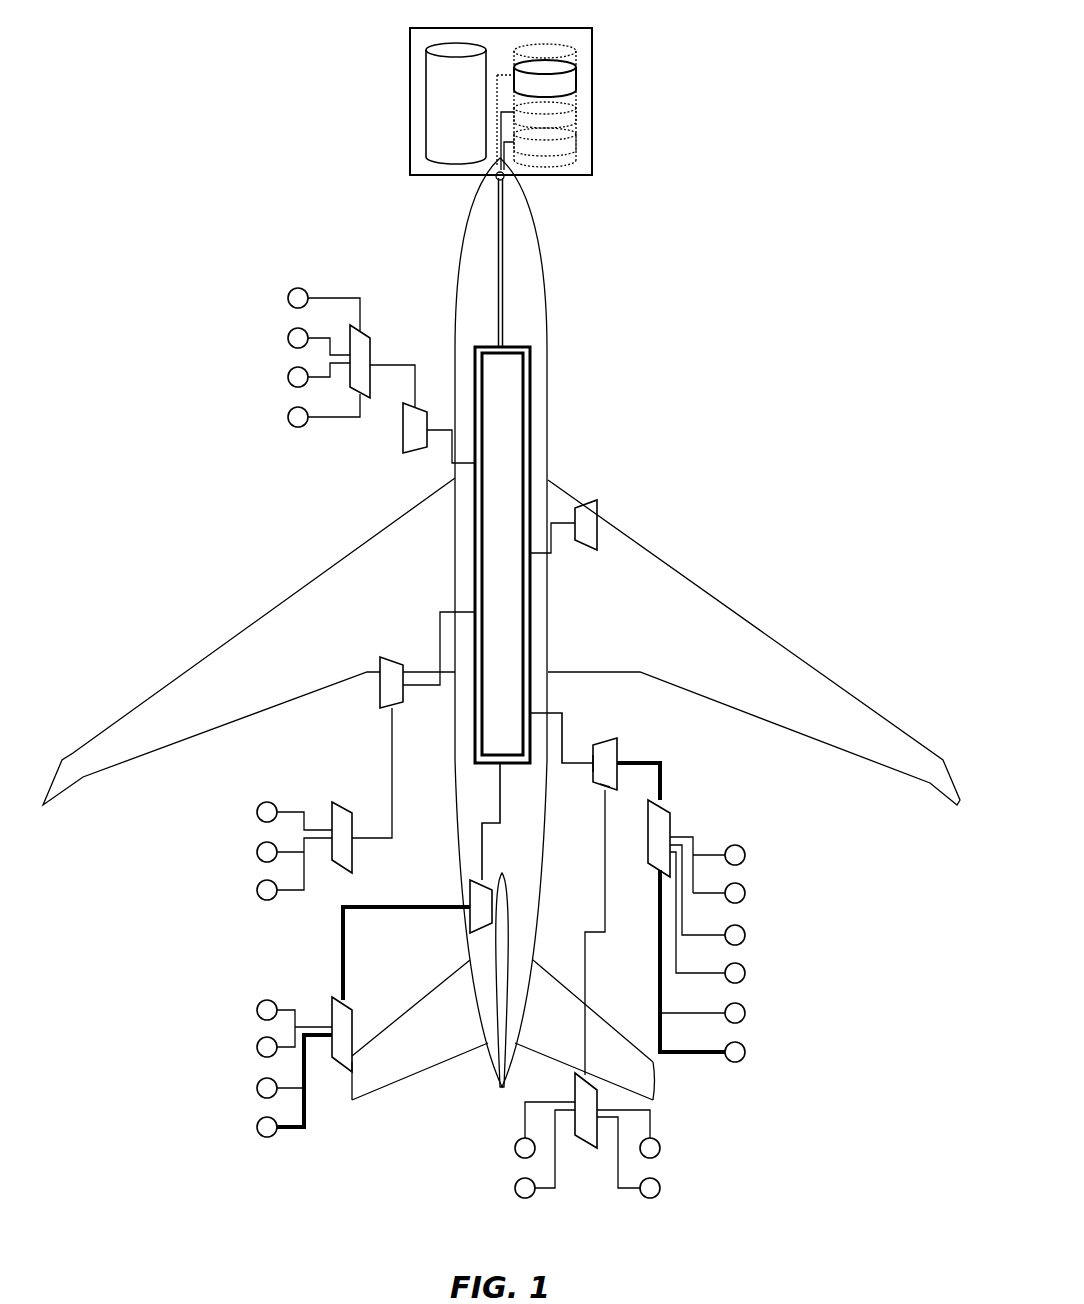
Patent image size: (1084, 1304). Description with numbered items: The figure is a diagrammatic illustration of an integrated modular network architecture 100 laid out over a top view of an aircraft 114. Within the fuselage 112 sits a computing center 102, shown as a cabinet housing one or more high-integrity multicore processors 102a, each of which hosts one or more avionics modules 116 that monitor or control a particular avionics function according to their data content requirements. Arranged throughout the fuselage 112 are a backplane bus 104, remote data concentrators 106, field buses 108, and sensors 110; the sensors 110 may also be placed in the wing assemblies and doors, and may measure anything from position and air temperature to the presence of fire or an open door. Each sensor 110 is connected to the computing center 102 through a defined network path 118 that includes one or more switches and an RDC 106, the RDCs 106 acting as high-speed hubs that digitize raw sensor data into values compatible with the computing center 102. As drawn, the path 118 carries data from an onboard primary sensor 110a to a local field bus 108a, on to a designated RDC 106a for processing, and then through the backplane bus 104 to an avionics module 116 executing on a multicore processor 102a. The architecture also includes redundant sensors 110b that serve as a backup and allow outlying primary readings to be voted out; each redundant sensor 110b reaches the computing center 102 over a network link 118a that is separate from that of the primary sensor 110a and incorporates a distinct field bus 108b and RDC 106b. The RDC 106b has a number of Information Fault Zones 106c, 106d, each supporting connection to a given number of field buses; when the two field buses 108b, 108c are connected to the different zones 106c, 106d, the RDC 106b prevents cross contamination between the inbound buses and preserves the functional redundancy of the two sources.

The network architecture 100 is at (177, 63).
The computing center 102 is at (410, 100).
The multicore processor 102a is at (547, 60).
The avionics module 116 is at (577, 77).
The fuselage 112 is at (455, 285).
The aircraft 114 is at (722, 495).
The backplane bus 104 is at (530, 360).
The field bus 108 is at (370, 332).
The sensor 110 is at (290, 427).
The remote data concentrator 106 is at (403, 450).
The designated RDC 106a is at (473, 898).
The RDC 106b is at (603, 740).
The Information Fault Zone 106c is at (624, 753).
The Information Fault Zone 106d is at (598, 788).
The defined network path 118 is at (350, 910).
The network link 118a is at (643, 760).
The local field bus 108a is at (335, 998).
The field bus 108b is at (663, 800).
The field bus 108c is at (575, 1092).
The primary sensor 110a is at (267, 1137).
The redundant sensor 110b is at (738, 1062).